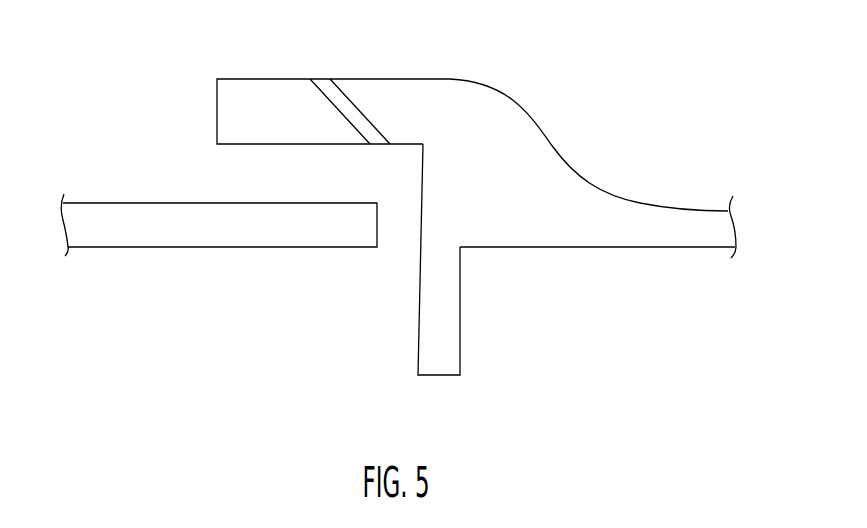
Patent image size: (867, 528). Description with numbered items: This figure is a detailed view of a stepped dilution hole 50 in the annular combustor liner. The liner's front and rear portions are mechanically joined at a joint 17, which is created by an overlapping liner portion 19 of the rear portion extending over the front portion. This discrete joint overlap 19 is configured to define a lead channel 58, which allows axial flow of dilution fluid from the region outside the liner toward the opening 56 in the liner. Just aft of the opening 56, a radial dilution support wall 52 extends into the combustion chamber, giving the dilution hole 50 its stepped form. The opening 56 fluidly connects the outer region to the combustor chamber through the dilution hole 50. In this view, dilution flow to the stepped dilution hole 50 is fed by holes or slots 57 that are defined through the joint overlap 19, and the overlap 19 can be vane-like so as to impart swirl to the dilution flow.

The joint 17 is at (518, 70).
The overlapping liner portion 19 is at (262, 79).
The holes/slots 57 is at (322, 79).
The radial dilution support wall 52 is at (460, 343).
The opening 56 is at (377, 248).
The lead channel 58 is at (230, 187).
The dilution hole 50 is at (165, 140).